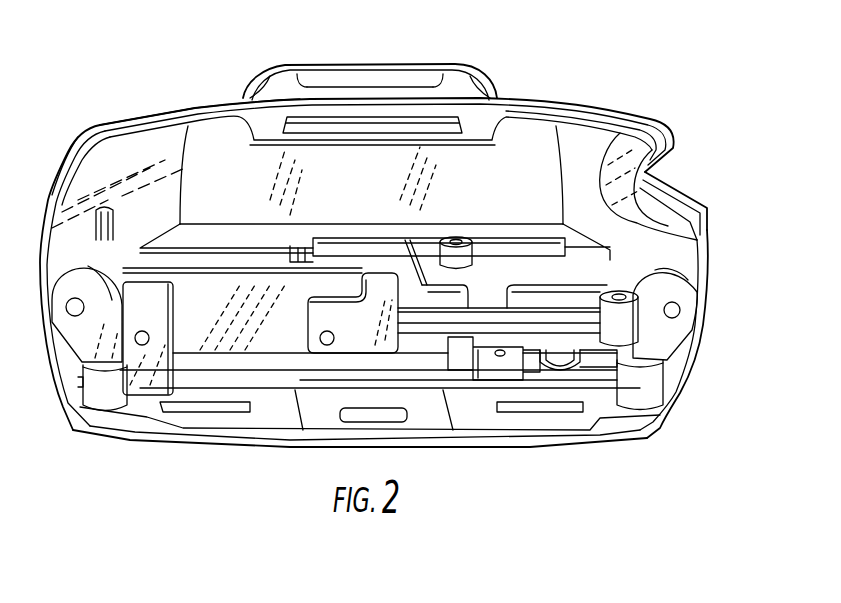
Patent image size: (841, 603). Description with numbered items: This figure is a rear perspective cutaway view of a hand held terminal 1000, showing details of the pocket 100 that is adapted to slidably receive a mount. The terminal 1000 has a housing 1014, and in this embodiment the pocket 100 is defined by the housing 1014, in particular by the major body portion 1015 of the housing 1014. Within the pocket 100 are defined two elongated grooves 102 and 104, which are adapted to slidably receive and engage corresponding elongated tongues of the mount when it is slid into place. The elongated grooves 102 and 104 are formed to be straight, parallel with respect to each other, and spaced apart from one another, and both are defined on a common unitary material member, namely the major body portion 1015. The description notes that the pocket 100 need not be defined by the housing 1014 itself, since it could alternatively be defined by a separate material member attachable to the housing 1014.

The terminal 1000 is at (608, 98).
The housing 1014 is at (197, 107).
The major body portion 1015 is at (140, 113).
The elongated groove 102 is at (256, 127).
The pocket 100 is at (413, 113).
The elongated groove 104 is at (480, 113).